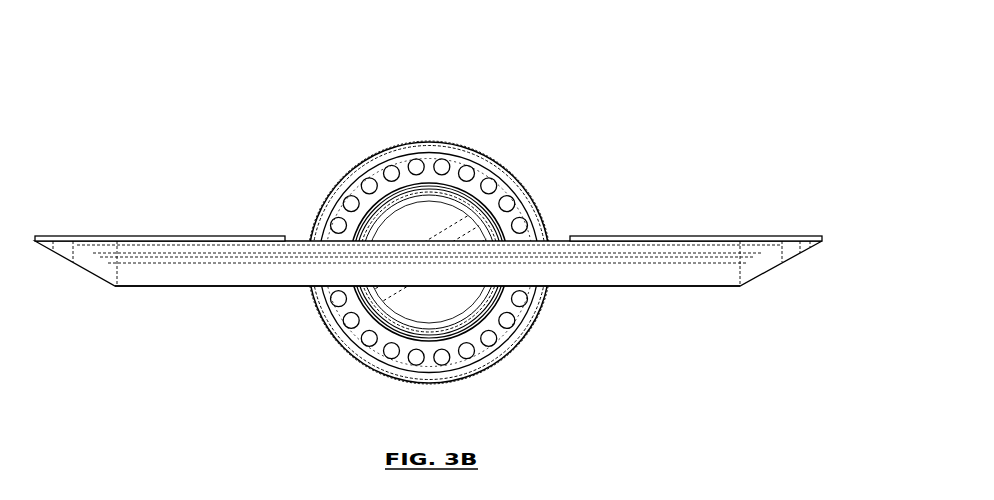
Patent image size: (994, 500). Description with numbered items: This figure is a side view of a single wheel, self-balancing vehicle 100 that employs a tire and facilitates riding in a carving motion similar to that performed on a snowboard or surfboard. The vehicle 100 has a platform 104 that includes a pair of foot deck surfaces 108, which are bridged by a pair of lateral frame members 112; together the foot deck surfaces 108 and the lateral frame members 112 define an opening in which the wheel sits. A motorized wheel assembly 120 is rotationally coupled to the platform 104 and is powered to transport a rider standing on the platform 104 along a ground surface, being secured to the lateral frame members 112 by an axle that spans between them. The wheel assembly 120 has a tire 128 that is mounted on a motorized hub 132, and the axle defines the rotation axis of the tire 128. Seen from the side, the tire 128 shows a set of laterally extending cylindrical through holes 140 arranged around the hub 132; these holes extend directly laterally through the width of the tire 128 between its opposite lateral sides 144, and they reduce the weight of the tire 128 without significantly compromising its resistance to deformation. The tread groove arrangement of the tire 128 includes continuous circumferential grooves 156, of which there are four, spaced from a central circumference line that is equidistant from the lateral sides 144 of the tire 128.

The single wheel, self-balancing vehicle 100 is at (326, 106).
The platform 104 is at (209, 217).
The foot deck surfaces 108 is at (170, 236).
The lateral frame members 112 is at (570, 286).
The motorized wheel assembly 120 is at (496, 109).
The tire 128 is at (433, 138).
The motorized hub 132 is at (488, 222).
The cylindrical through holes 140 is at (496, 181).
The lateral sides 144 is at (479, 346).
The circumferential grooves 156 is at (493, 156).